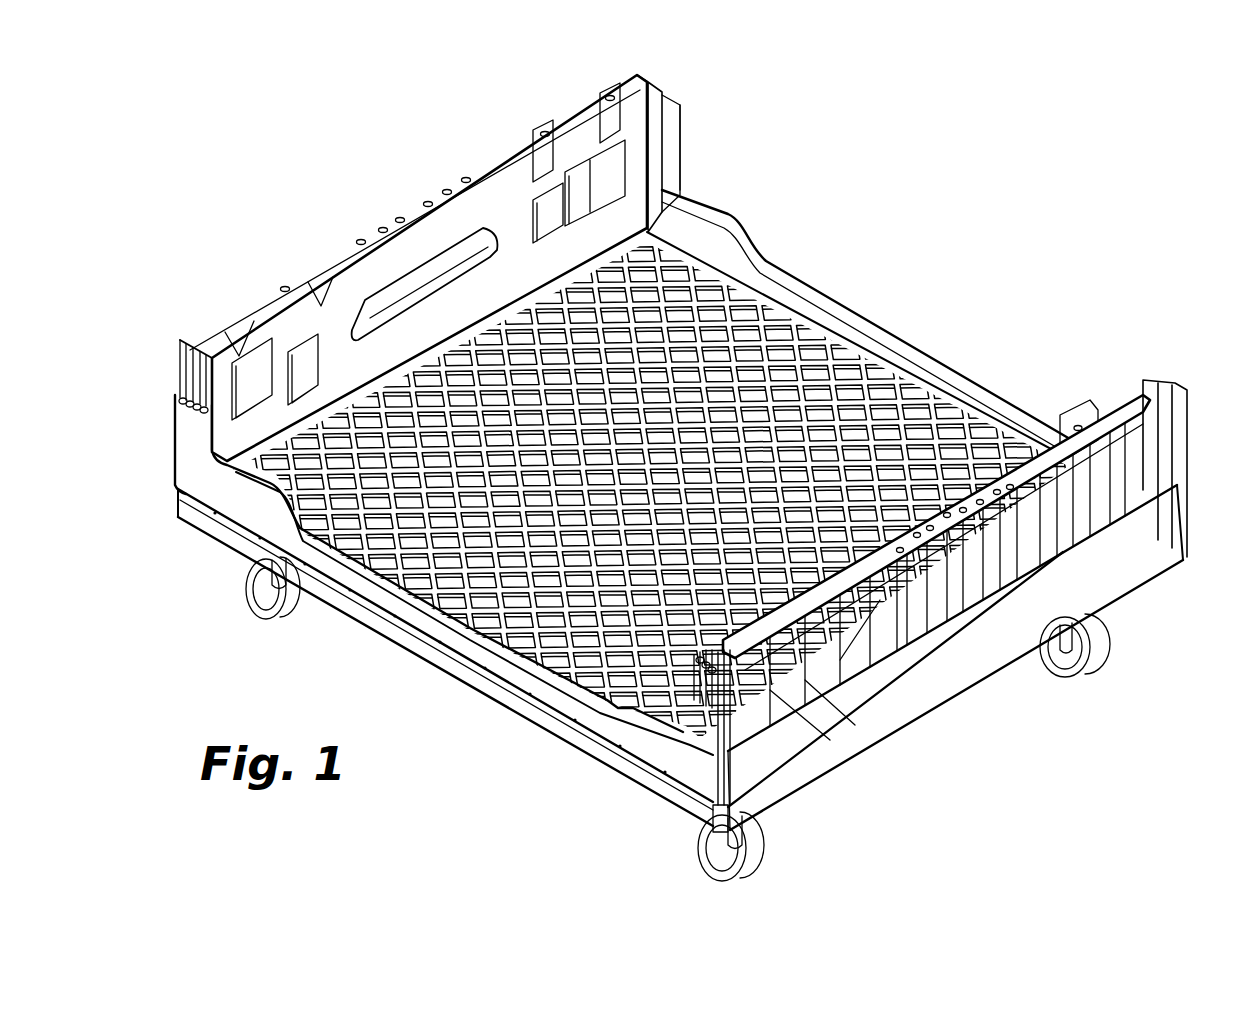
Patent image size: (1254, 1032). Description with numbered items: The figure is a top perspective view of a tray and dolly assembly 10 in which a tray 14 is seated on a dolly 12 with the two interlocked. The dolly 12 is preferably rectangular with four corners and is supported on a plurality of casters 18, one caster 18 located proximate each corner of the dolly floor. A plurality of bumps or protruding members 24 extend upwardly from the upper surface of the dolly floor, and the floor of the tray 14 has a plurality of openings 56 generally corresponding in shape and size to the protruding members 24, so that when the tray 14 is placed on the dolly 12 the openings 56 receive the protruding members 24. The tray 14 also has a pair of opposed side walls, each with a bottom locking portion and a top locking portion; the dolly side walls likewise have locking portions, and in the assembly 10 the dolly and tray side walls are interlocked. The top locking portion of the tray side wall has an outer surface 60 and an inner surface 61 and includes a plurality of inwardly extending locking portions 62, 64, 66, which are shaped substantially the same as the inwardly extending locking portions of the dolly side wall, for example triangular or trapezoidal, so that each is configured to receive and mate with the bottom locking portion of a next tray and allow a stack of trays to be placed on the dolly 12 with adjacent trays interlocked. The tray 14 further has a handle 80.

The tray and dolly assembly 10 is at (808, 260).
The dolly 12 is at (501, 710).
The tray 14 is at (639, 730).
The casters 18 is at (260, 612).
The protruding members 24 is at (803, 350).
The openings 56 is at (851, 366).
The outer surface 60 is at (1097, 505).
The inner surface 61 is at (487, 192).
The inwardly extending locking portion 62 is at (385, 222).
The inwardly extending locking portion 64 is at (251, 310).
The inwardly extending locking portion 66 is at (576, 125).
The handle 80 is at (452, 263).